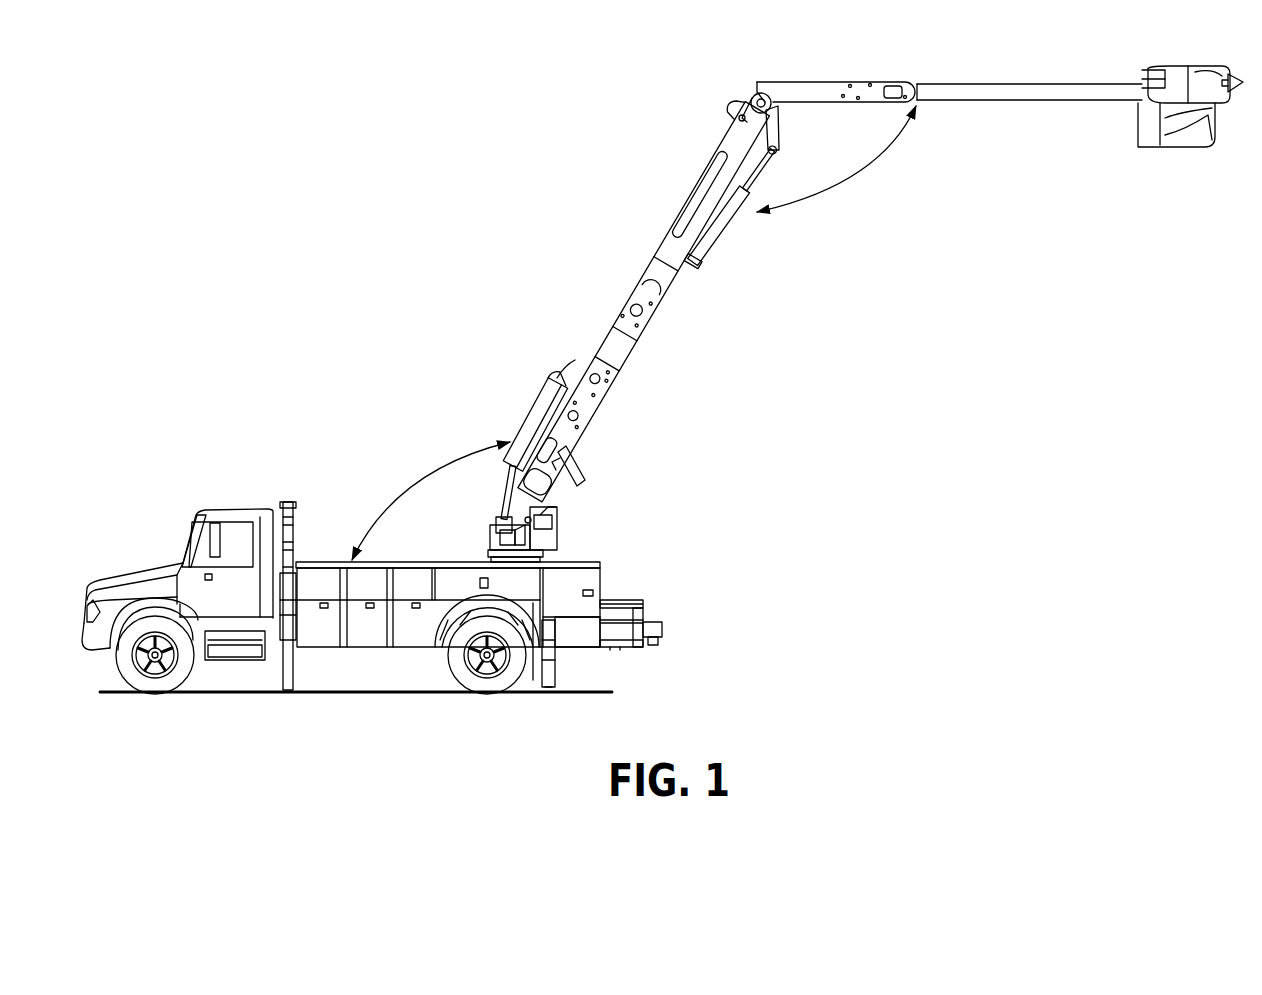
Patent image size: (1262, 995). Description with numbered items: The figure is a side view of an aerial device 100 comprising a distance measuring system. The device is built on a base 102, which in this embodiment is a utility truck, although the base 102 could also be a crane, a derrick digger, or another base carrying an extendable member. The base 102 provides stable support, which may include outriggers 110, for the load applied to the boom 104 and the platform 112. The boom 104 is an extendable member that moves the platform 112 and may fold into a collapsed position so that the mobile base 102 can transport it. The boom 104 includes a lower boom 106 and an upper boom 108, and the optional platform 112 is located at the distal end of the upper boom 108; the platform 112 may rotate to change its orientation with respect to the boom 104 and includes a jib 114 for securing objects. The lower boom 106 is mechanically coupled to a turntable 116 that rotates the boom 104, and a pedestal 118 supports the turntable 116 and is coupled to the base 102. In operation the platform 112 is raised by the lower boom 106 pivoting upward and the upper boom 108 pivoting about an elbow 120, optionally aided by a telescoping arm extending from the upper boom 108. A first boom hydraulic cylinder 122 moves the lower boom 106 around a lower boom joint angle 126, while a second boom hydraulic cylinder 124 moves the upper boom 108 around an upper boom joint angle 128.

The aerial device 100 is at (352, 86).
The base 102 is at (445, 717).
The boom 104 is at (692, 127).
The lower boom 106 is at (607, 396).
The upper boom 108 is at (1030, 82).
The outriggers 110 is at (291, 663).
The platform 112 is at (1172, 147).
The jib 114 is at (1227, 78).
The turntable 116 is at (543, 512).
The pedestal 118 is at (536, 557).
The elbow 120 is at (752, 95).
The first boom hydraulic cylinder 122 is at (537, 424).
The second boom hydraulic cylinder 124 is at (719, 226).
The lower boom joint angle 126 is at (420, 486).
The upper boom joint angle 128 is at (840, 184).